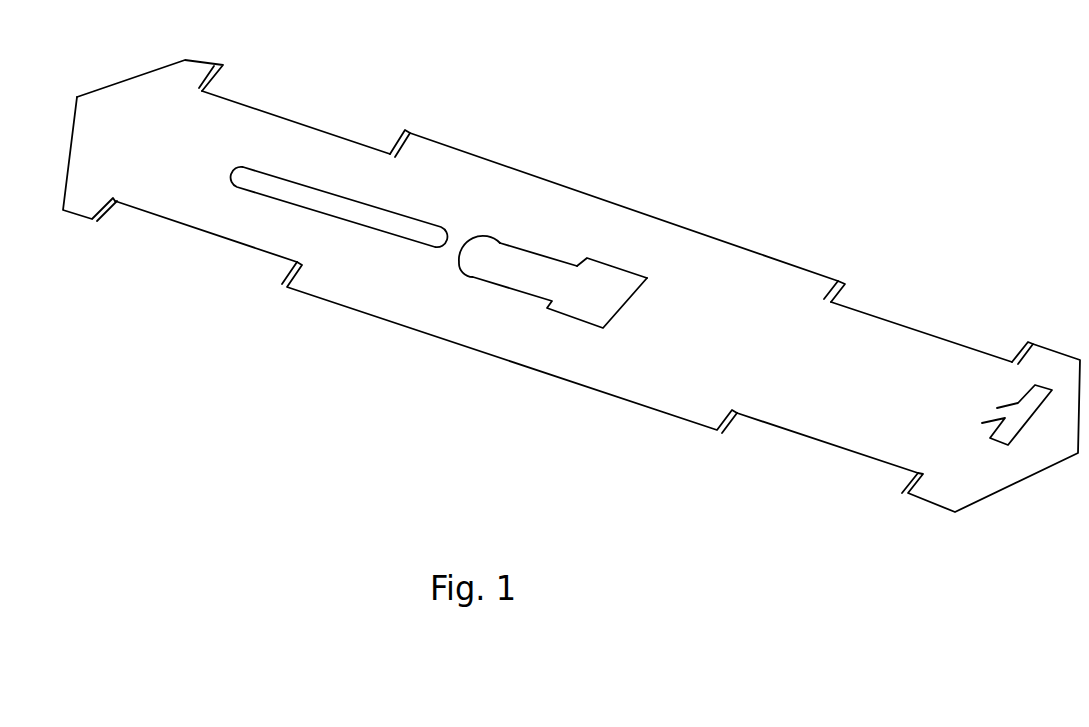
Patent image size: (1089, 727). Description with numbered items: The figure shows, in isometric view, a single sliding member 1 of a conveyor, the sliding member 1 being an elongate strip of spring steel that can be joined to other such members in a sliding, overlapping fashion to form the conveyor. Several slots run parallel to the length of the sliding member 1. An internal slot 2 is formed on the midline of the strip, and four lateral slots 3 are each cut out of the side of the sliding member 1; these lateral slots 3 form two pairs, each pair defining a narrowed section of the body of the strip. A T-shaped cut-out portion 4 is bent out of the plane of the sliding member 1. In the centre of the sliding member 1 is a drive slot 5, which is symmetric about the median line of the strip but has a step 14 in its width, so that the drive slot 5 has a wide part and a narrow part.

The sliding member 1 is at (647, 230).
The internal slot 2 is at (403, 223).
The lateral slot 3 is at (300, 120).
The T-shaped cut-out portion 4 is at (1025, 415).
The drive slot 5 is at (527, 272).
The step 14 is at (596, 238).